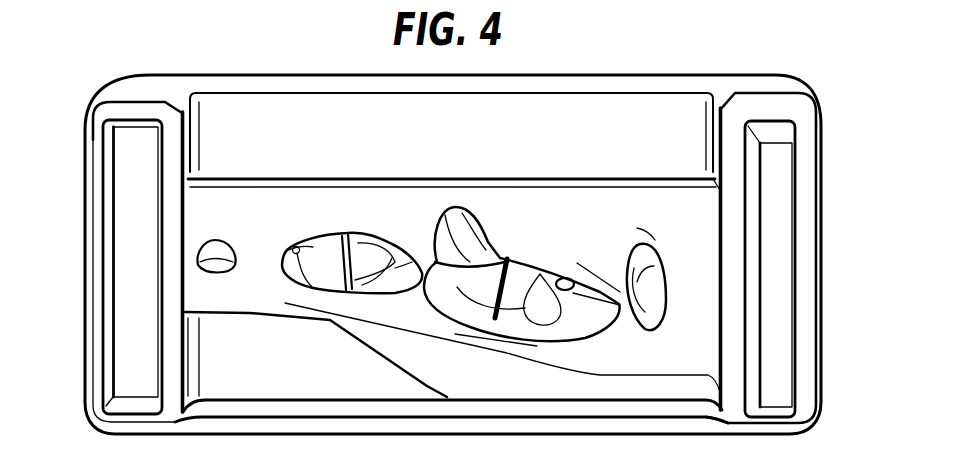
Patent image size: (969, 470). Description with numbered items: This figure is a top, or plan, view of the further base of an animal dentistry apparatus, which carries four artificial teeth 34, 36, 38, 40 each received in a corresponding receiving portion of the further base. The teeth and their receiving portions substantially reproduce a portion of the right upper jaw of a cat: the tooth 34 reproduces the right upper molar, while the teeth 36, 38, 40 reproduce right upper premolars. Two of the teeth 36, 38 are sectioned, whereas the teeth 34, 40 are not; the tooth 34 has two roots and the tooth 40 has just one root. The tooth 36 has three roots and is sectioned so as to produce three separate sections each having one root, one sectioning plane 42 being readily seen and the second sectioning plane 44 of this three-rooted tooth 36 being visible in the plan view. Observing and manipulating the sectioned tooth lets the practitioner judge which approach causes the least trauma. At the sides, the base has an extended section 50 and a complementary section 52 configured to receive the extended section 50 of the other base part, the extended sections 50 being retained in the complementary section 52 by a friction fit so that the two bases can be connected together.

The tooth 34 is at (645, 332).
The tooth 36 is at (622, 170).
The tooth 38 is at (422, 220).
The tooth 40 is at (212, 272).
The sectioning plane 42 is at (502, 296).
The second sectioning plane 44 is at (452, 262).
The extended section 50 is at (783, 223).
The complementary section 52 is at (131, 225).